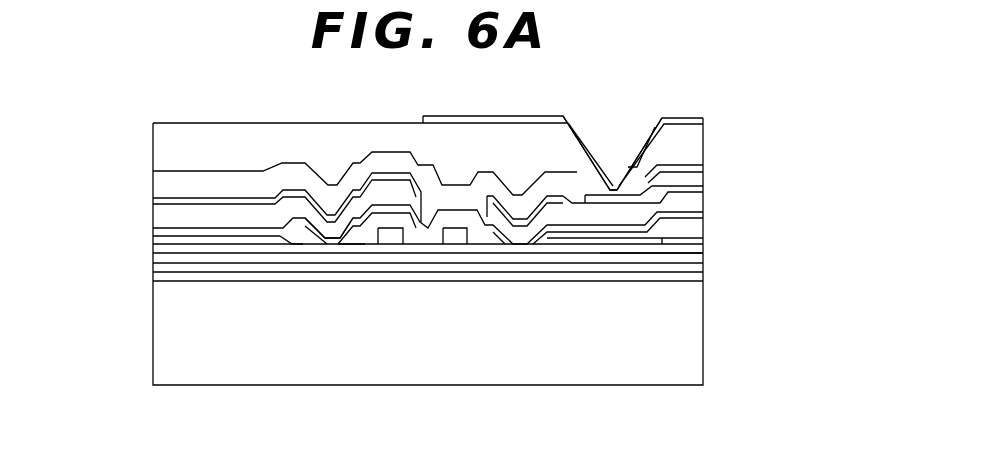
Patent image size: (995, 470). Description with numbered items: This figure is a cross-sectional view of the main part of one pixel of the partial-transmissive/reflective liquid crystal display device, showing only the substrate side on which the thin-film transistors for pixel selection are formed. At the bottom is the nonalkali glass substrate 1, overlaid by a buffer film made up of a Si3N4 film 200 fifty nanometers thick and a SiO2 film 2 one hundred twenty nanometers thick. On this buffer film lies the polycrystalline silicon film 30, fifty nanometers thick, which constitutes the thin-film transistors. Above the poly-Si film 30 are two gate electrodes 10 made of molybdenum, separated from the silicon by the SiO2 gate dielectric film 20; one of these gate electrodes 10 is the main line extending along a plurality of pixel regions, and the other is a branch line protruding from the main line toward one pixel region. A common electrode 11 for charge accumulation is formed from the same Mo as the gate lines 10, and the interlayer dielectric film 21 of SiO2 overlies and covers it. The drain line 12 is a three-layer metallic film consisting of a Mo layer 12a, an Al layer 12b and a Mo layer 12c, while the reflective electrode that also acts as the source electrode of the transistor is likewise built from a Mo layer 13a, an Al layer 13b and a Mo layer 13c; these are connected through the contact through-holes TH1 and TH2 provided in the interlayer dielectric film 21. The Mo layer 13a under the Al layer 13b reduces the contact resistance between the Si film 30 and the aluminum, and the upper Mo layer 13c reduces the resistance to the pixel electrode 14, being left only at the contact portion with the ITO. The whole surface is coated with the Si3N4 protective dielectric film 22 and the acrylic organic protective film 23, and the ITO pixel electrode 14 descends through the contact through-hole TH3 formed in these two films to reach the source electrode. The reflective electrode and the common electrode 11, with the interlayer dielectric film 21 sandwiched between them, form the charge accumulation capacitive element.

The nonalkali glass substrate 1 is at (160, 357).
The Si3N4 film 200 is at (152, 278).
The SiO2 film 2 is at (153, 265).
The gate dielectric film 20 is at (153, 252).
The interlayer dielectric film 21 is at (263, 244).
The gate line 10 is at (395, 242).
The polycrystalline silicon film 30 is at (503, 253).
The common electrode 11 is at (703, 255).
The drain line 12 is at (83, 145).
The Mo layer 12a is at (153, 233).
The Al layer 12b is at (153, 217).
The Mo layer 12c is at (153, 201).
The Mo layer 13a is at (697, 218).
The Al layer 13b is at (697, 200).
The Mo layer 13c is at (623, 190).
The pixel electrode 14 is at (462, 115).
The protective dielectric film 22 is at (692, 138).
The organic protective film 23 is at (703, 118).
The contact through-hole TH1 is at (297, 243).
The contact through-hole TH2 is at (547, 247).
The contact through-hole TH3 is at (652, 127).